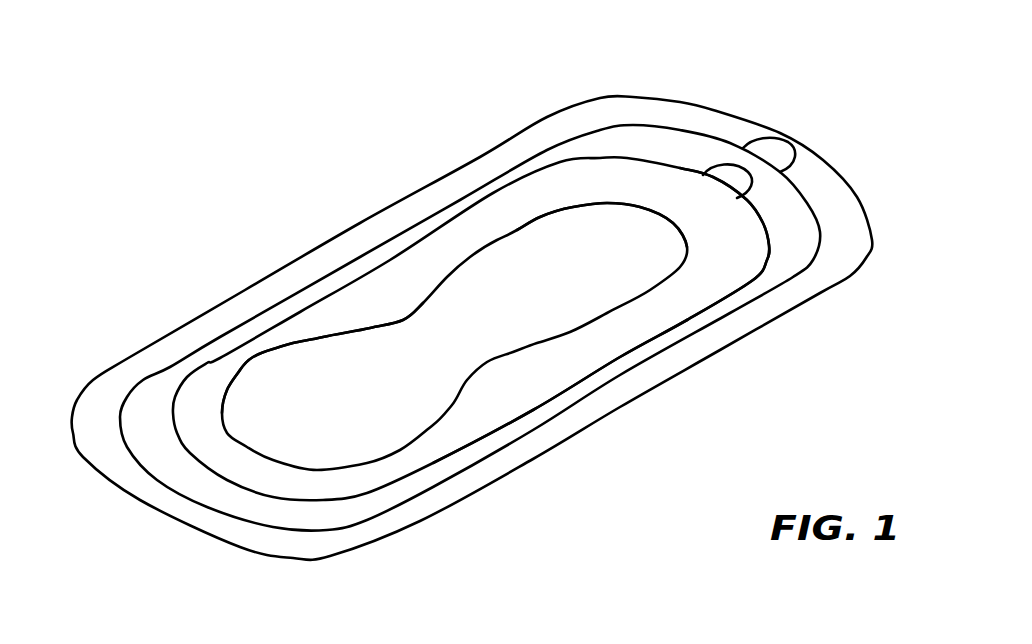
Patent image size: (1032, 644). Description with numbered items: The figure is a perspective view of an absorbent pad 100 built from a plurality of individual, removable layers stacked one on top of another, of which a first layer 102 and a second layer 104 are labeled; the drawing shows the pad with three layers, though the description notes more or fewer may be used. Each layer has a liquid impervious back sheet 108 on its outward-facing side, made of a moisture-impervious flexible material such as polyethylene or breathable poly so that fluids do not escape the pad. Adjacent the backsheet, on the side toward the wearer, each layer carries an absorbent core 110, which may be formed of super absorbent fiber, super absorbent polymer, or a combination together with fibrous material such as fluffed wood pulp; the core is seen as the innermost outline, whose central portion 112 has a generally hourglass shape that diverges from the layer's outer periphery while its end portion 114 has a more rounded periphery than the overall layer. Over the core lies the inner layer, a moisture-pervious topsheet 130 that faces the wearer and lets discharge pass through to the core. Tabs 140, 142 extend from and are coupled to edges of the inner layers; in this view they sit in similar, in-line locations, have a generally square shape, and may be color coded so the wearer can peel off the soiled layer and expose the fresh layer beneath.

The absorbent pad 100 is at (127, 357).
The first layer 102 is at (360, 230).
The second layer 104 is at (428, 215).
The liquid impervious back sheet 108 is at (757, 270).
The absorbent core 110 is at (360, 417).
The central portion of the absorbent core 112 is at (313, 362).
The end portion of the absorbent core 114 is at (587, 227).
The topsheet 130 is at (537, 387).
The tab 140 is at (790, 142).
The tab 142 is at (750, 185).